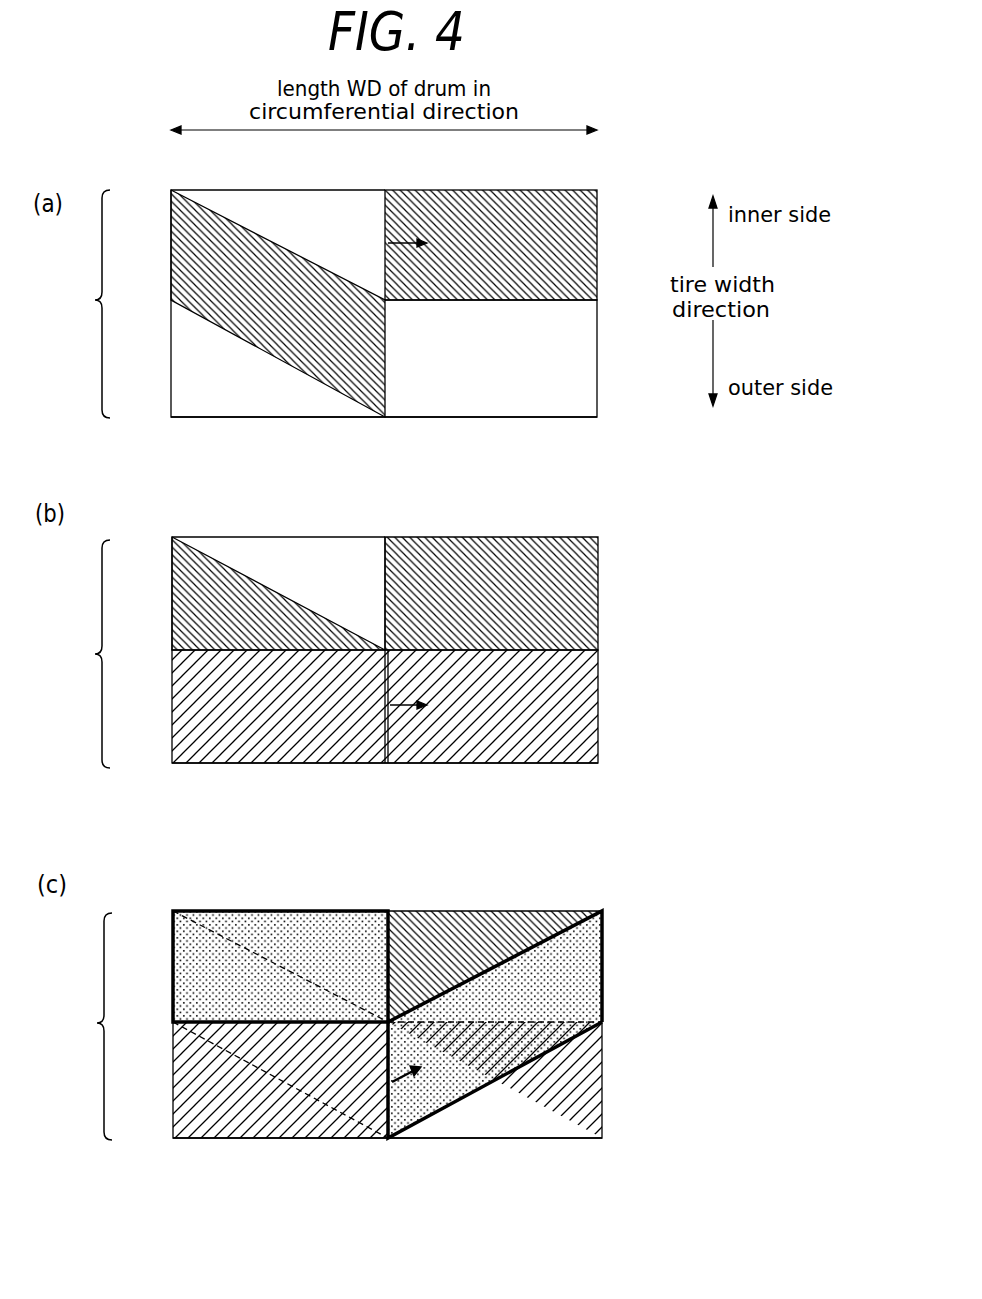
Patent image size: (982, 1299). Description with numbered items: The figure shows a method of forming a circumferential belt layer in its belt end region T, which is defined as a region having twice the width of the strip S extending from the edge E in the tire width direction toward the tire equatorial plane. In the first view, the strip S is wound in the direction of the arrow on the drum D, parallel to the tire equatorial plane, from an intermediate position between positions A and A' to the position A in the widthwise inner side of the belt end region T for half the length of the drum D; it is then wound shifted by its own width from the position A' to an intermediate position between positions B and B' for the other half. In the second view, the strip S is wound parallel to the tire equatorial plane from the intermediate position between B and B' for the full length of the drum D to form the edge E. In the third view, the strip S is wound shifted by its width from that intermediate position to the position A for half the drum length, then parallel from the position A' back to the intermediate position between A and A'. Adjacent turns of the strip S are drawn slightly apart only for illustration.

The drum D is at (233, 188).
The strip S is at (416, 188).
The position A is at (511, 627).
The position B is at (511, 719).
The position A' is at (256, 588).
The position B' is at (257, 719).
The belt end region T is at (93, 665).
The edge E is at (598, 417).